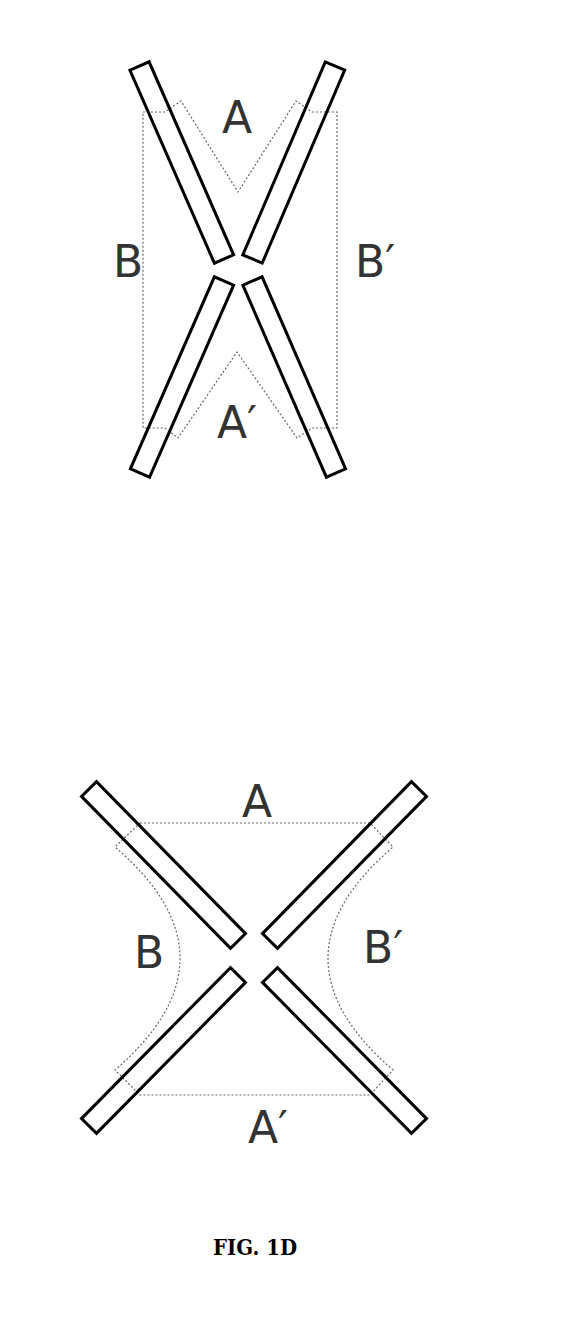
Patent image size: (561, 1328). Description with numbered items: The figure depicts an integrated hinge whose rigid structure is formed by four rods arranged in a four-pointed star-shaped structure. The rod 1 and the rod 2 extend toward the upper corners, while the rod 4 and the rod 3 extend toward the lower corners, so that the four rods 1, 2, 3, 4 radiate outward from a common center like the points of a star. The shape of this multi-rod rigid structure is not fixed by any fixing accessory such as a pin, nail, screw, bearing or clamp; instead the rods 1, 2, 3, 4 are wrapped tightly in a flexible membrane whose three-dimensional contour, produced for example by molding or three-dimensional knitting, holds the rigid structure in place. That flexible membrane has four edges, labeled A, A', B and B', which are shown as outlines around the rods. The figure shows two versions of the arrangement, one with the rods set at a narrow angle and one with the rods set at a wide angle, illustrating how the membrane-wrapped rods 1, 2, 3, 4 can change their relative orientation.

The rod 1 is at (147, 474).
The rod 2 is at (357, 474).
The rod 3 is at (357, 734).
The rod 4 is at (146, 734).